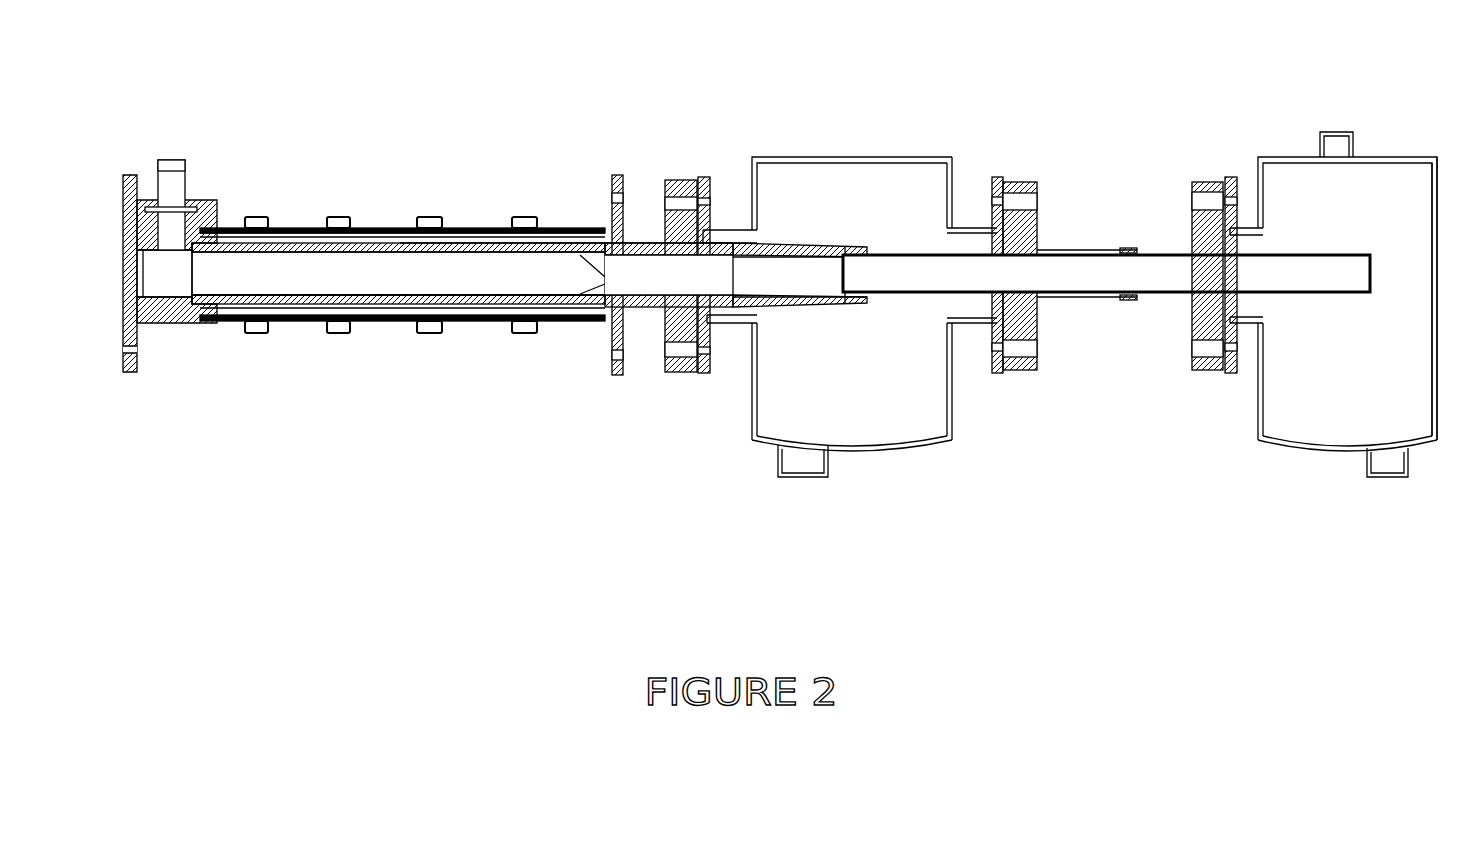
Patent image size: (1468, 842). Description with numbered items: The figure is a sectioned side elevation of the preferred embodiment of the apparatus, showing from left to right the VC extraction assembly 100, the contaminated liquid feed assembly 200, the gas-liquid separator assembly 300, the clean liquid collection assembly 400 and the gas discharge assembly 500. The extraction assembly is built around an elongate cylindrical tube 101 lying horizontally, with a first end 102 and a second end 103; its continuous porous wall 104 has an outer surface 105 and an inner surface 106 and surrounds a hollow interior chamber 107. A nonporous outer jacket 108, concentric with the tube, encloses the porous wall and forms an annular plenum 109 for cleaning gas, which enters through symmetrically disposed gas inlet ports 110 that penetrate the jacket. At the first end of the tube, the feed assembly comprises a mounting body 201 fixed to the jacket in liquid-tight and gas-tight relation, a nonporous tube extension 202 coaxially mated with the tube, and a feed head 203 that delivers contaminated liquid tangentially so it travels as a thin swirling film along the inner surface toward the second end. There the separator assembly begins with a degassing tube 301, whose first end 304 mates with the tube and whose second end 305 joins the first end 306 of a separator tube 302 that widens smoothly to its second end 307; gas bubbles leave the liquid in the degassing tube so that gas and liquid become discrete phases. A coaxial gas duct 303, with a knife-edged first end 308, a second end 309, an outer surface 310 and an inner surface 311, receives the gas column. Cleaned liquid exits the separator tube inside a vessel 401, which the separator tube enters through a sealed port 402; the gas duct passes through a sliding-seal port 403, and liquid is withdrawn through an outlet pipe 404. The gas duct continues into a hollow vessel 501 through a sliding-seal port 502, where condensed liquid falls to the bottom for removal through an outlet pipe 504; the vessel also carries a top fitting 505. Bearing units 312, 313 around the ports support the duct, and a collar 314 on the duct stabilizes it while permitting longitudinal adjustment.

The VC extraction assembly 100 is at (398, 270).
The elongate cylindrical tube 101 is at (317, 300).
The first end 102 is at (217, 303).
The second end 103 is at (593, 310).
The porous wall 104 is at (470, 240).
The outer surface 105 is at (290, 300).
The inner surface 106 is at (297, 240).
The hollow interior chamber 107 is at (413, 278).
The nonporous outer jacket 108 is at (498, 226).
The annular plenum 109 is at (362, 213).
The gas inlet ports 110 is at (258, 214).
The contaminated liquid feed assembly 200 is at (201, 175).
The mounting body 201 is at (150, 313).
The tube extension 202 is at (165, 280).
The feed head 203 is at (148, 196).
The gas-liquid separator assembly 300 is at (726, 243).
The degassing tube 301 is at (788, 319).
The separator tube 302 is at (833, 260).
The gas duct 303 is at (1087, 280).
The first end 304 is at (605, 277).
The second end 305 is at (725, 322).
The first end 306 is at (763, 255).
The second end 307 is at (852, 260).
The first end 308 is at (840, 300).
The second end 309 is at (1370, 283).
The outer surface 310 is at (1111, 340).
The inner surface 311 is at (1150, 252).
The bearing unit 312 is at (1047, 223).
The bearing unit 313 is at (1180, 220).
The collar 314 is at (1067, 250).
The clean liquid collection assembly 400 is at (845, 295).
The vessel 401 is at (955, 175).
The port 402 is at (767, 203).
The port 403 is at (968, 310).
The outlet pipe 404 is at (808, 467).
The gas discharge assembly 500 is at (1333, 302).
The hollow vessel 501 is at (1388, 155).
The port 502 is at (1238, 310).
The outlet pipe 504 is at (1388, 465).
The top port 505 is at (1331, 147).